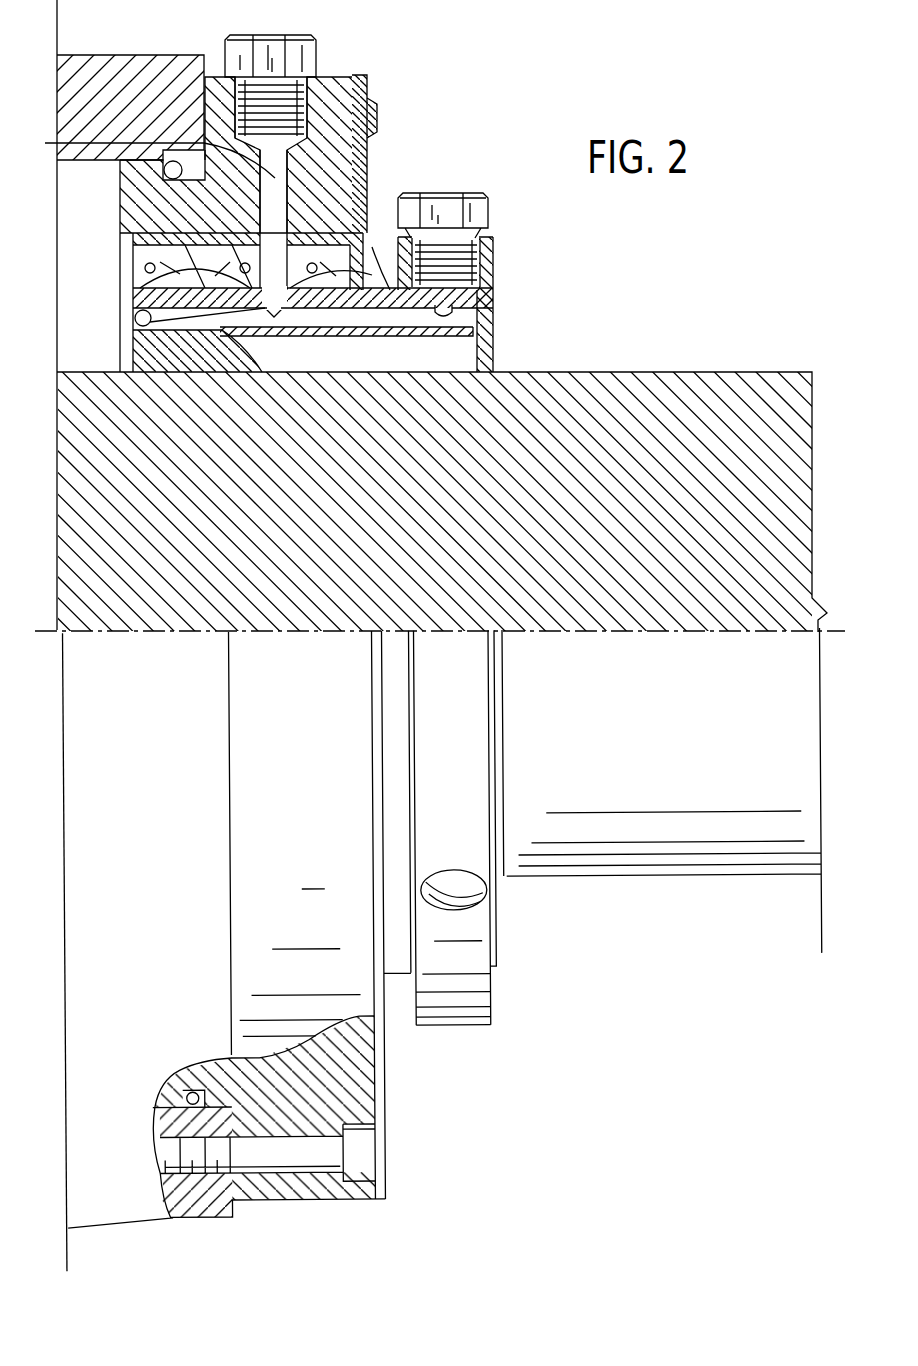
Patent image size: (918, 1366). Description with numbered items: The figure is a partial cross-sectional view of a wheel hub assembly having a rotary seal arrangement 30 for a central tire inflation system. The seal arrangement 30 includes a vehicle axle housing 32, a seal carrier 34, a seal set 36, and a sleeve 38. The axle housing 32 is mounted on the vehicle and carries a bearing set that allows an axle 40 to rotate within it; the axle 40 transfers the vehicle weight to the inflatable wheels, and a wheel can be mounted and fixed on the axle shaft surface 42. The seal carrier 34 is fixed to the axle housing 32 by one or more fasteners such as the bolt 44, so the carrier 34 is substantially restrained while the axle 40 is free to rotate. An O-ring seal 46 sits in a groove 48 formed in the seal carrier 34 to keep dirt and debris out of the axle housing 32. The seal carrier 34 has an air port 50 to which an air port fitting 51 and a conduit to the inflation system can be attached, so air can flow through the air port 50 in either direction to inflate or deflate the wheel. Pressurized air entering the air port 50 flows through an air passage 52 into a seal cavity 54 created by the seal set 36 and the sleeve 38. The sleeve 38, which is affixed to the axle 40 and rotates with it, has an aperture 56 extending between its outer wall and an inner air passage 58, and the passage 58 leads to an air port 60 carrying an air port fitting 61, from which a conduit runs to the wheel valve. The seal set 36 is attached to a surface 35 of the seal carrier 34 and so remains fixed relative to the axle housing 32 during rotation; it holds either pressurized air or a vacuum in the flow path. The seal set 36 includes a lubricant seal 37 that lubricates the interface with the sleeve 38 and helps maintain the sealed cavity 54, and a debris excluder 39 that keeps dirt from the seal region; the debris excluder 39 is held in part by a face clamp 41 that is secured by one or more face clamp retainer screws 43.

The rotary seal arrangement 30 is at (472, 167).
The vehicle axle housing 32 is at (68, 62).
The seal carrier 34 is at (334, 103).
The surface 35 is at (133, 248).
The seal set 36 is at (330, 213).
The lubricant seal 37 is at (140, 282).
The sleeve 38 is at (487, 322).
The debris excluder 39 is at (373, 247).
The axle 40 is at (775, 387).
The face clamp 41 is at (367, 96).
The axle shaft surface 42 is at (662, 798).
The face clamp retainer screw 43 is at (372, 117).
The bolt 44 is at (286, 1160).
The O-ring seal 46 is at (164, 172).
The groove 48 is at (178, 168).
The air port 50 is at (284, 78).
The air port fitting 51 is at (254, 52).
The air passage 52 is at (147, 150).
The seal cavity 54 is at (275, 263).
The aperture 56 is at (134, 333).
The air passage 58 is at (463, 318).
The air port 60 is at (443, 303).
The air port fitting 61 is at (455, 206).